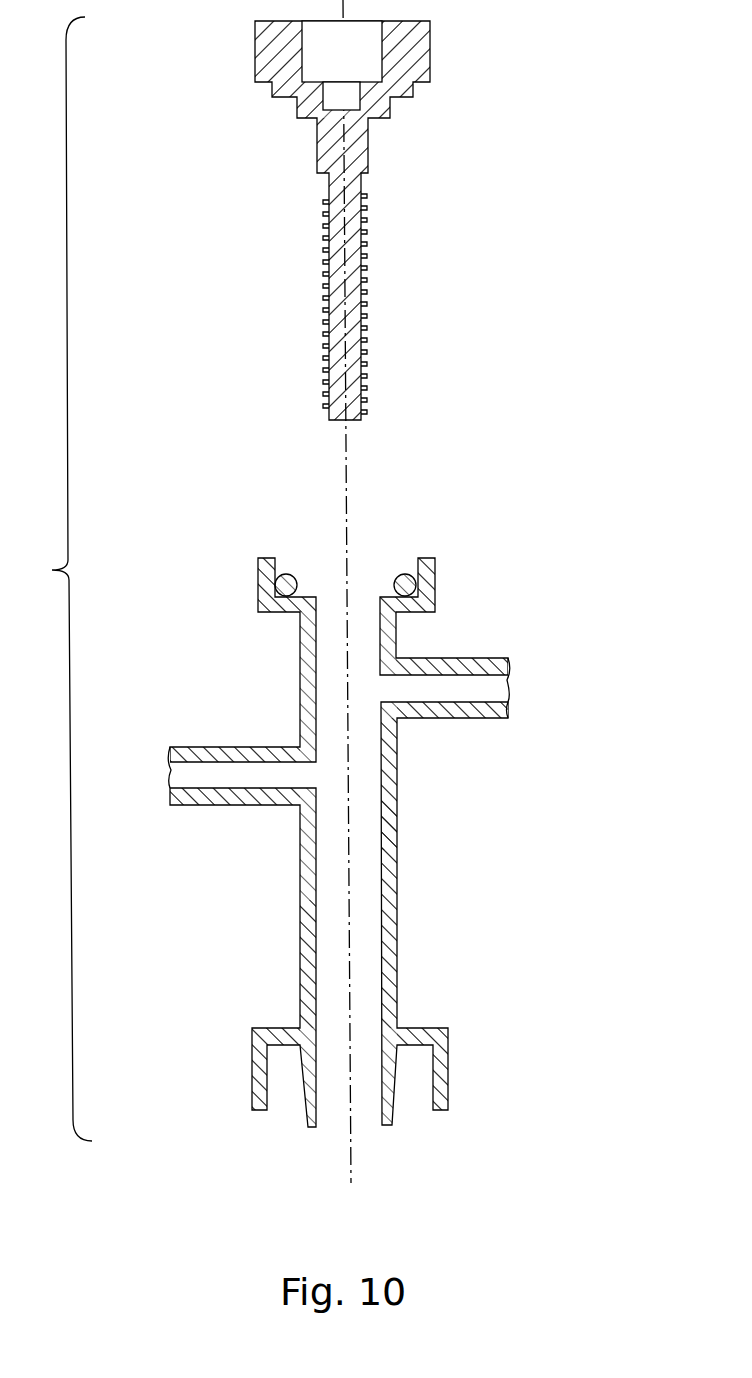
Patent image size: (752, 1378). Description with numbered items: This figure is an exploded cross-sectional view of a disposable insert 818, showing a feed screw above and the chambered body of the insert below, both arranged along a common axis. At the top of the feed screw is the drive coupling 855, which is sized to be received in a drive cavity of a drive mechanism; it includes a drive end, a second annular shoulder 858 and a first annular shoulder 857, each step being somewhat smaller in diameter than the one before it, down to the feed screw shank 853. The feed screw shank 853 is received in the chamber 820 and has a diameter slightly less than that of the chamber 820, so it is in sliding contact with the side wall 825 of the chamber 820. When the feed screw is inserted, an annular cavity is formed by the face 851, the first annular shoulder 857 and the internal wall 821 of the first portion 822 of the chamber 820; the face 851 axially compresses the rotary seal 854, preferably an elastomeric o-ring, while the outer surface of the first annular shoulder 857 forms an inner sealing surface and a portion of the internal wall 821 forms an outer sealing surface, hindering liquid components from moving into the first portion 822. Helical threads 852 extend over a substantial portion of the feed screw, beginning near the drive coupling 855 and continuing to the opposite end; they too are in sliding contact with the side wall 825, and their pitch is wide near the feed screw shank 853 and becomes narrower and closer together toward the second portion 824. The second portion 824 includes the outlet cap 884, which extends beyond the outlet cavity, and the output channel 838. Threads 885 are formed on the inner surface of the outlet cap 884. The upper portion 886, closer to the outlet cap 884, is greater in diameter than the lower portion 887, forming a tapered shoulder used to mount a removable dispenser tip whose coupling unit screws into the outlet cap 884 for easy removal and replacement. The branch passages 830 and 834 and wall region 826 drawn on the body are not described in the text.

The disposable insert 818 is at (47, 579).
The face 851 is at (280, 100).
The drive coupling 855 is at (416, 54).
The second annular shoulder 858 is at (415, 92).
The first annular shoulder 857 is at (396, 107).
The feed screw shank 853 is at (368, 152).
The helical threads 852 is at (327, 217).
The chamber 820 is at (331, 712).
The internal wall 821 is at (281, 566).
The first portion 822 is at (419, 565).
The rotary seal 854 is at (298, 578).
The right branch tube 834 is at (456, 658).
The left branch tube 830 is at (268, 747).
The wall 826 is at (363, 753).
The side wall 825 is at (360, 812).
The second portion 824 is at (335, 1008).
The upper portion 886 is at (302, 1072).
The outlet cap 884 is at (448, 1050).
The threads 885 is at (266, 1103).
The lower portion 887 is at (307, 1117).
The output channel 838 is at (361, 1115).